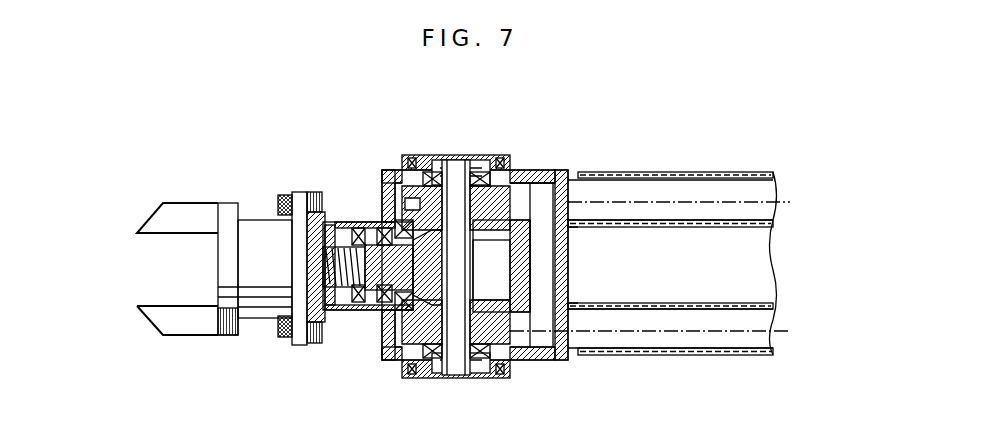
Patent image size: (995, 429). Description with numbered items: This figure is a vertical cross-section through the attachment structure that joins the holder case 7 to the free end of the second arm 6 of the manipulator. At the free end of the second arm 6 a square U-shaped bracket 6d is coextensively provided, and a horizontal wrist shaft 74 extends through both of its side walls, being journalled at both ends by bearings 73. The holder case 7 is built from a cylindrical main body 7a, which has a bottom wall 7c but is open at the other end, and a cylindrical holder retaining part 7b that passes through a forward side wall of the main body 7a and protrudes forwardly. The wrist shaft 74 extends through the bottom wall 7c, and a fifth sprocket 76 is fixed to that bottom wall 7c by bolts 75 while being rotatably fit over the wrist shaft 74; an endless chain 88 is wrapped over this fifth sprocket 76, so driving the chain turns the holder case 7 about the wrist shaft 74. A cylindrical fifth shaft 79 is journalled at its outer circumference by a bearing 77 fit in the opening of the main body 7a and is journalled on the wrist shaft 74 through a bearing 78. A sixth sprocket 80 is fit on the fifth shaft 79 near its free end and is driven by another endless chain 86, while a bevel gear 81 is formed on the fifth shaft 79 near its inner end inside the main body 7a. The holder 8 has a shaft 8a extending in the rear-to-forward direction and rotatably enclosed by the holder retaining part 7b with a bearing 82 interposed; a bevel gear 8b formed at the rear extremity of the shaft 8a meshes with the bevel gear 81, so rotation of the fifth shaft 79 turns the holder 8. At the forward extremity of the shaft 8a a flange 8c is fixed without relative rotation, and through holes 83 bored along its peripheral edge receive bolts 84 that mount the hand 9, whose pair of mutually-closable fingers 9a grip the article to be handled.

The second arm 6 is at (755, 165).
The square U-shaped bracket 6d is at (560, 172).
The holder case 7 is at (357, 366).
The cylindrical main body 7a is at (530, 273).
The cylindrical holder retaining part 7b is at (338, 220).
The bottom wall 7c is at (540, 338).
The holder 8 is at (320, 348).
The shaft of the holder 8a is at (365, 312).
The bevel gear 8b is at (398, 357).
The flange 8c is at (315, 193).
The hand 9 is at (257, 233).
The fingers 9a is at (148, 233).
The bearings 73 is at (430, 161).
The wrist shaft 74 is at (453, 347).
The bolts 75 is at (491, 294).
The fifth sprocket 76 is at (500, 318).
The bearing 77 is at (525, 180).
The bearing 78 is at (462, 165).
The fifth shaft 79 is at (400, 185).
The sixth sprocket 80 is at (505, 200).
The bevel gear 81 is at (540, 243).
The bearing 82 is at (355, 228).
The through holes 83 is at (319, 194).
The bolts 84 is at (284, 199).
The endless chain 86 is at (707, 200).
The endless chain 88 is at (657, 333).